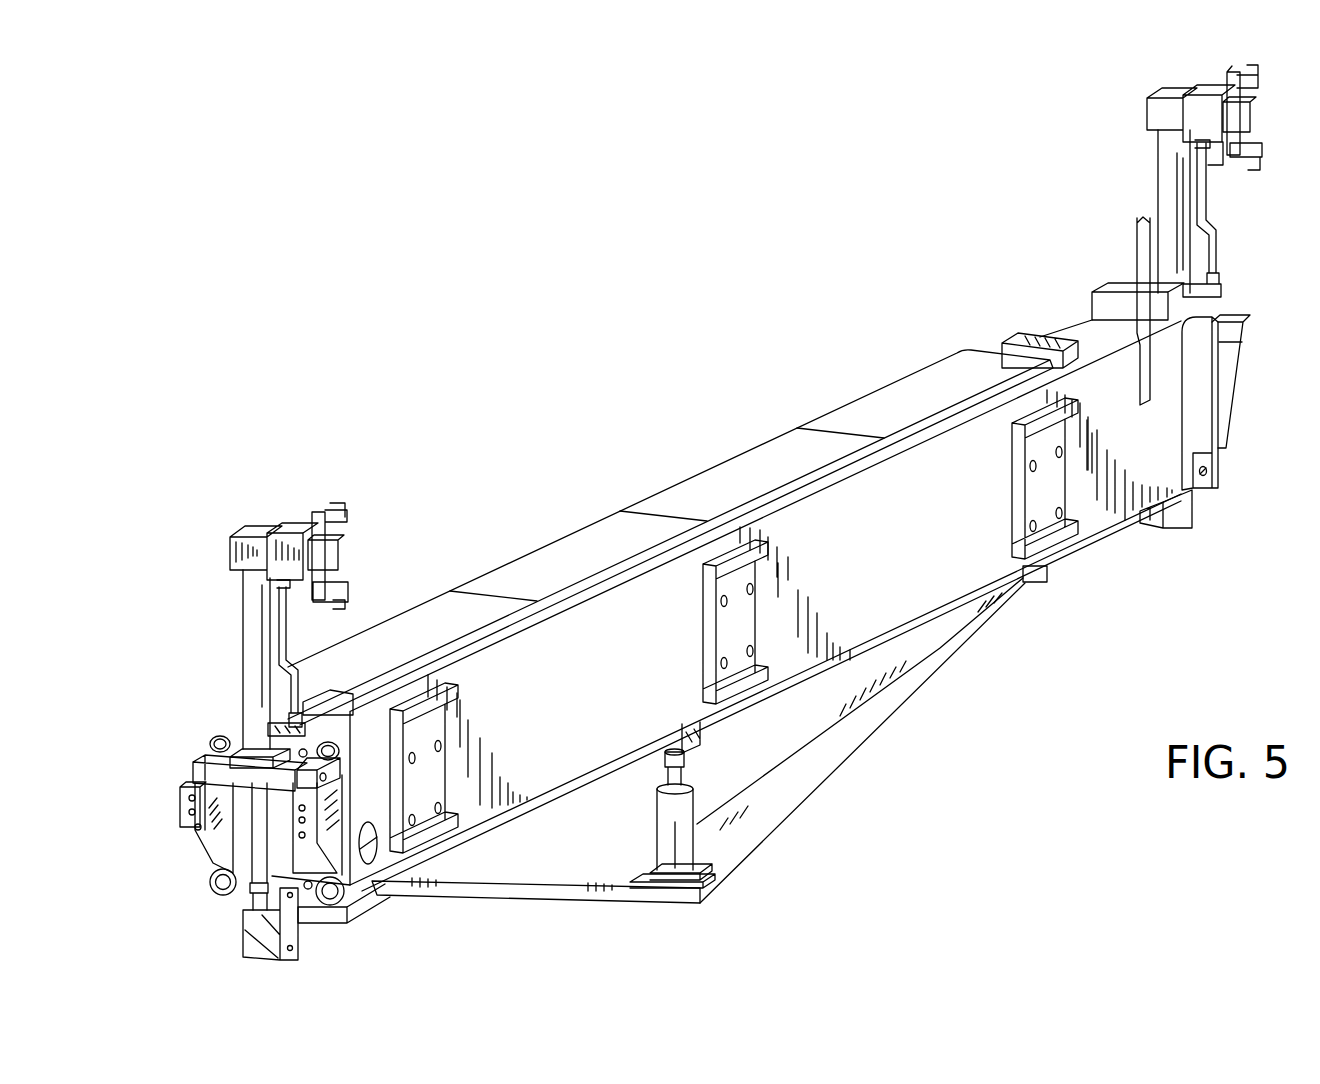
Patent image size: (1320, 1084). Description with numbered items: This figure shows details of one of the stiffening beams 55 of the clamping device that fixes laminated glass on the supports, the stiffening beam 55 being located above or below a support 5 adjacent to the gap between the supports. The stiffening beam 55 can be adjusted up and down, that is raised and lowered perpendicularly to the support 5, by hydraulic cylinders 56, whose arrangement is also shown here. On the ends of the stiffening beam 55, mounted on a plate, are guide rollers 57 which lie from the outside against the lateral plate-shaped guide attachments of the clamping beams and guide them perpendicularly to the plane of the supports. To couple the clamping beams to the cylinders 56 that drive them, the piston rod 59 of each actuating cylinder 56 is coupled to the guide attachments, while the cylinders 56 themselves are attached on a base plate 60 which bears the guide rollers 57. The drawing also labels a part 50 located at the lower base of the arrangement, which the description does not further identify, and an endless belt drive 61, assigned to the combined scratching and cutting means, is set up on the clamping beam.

The support 5 is at (642, 900).
The lift cylinder 50 is at (683, 830).
The stiffening beam 55 is at (897, 590).
The hydraulic cylinder 56 is at (257, 609).
The guide roller 57 is at (223, 896).
The piston rod 59 is at (258, 837).
The base plate 60 is at (250, 803).
The endless belt drive 61 is at (885, 410).